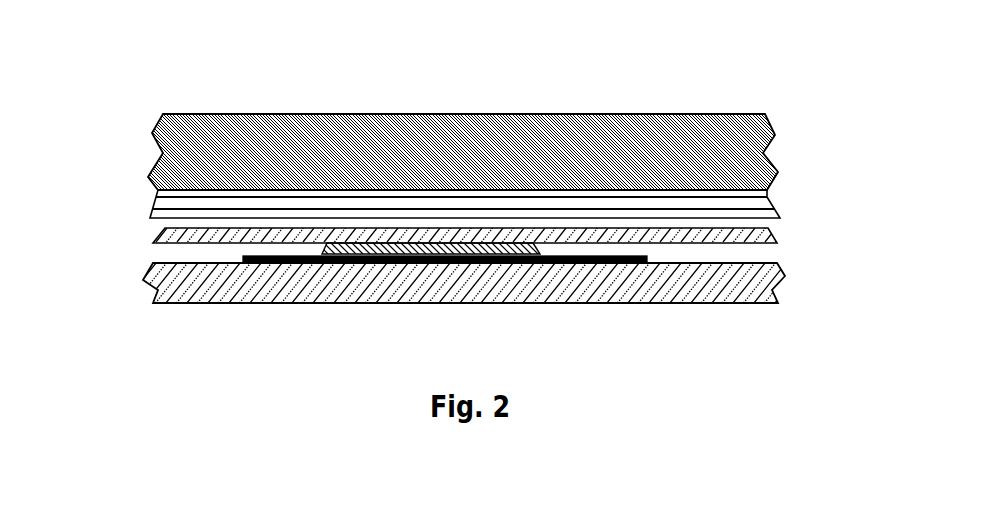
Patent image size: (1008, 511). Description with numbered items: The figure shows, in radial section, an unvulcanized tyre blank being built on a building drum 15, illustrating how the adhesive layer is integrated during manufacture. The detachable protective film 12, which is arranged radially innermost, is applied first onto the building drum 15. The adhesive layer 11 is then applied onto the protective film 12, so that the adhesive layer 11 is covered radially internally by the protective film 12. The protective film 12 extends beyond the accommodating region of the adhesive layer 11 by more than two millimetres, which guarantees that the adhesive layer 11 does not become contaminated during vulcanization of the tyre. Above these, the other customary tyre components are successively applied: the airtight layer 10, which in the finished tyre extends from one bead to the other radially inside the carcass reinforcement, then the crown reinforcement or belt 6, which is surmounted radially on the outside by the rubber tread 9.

The rubber tread 9 is at (263, 162).
The crown reinforcement 6 is at (222, 218).
The airtight layer 10 is at (178, 228).
The adhesive layer 11 is at (545, 252).
The protective film 12 is at (250, 261).
The building drum 15 is at (617, 285).